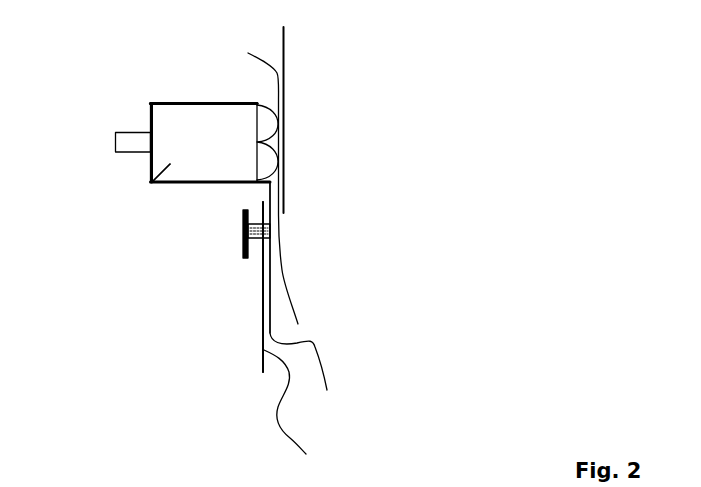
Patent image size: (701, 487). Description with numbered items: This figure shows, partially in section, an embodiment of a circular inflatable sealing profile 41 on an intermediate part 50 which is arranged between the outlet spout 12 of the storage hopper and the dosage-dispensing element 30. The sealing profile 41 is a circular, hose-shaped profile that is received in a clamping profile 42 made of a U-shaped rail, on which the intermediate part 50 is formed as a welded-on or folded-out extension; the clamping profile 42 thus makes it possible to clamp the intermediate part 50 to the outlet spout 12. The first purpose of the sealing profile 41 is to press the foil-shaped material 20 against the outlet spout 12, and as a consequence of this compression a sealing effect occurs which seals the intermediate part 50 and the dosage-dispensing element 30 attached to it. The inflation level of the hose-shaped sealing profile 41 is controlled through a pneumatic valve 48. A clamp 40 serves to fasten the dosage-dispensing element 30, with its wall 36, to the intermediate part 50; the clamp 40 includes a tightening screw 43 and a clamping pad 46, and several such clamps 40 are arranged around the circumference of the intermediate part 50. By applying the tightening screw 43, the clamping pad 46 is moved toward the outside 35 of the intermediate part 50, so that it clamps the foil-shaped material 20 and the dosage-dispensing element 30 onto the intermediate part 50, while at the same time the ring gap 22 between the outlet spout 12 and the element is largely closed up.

The outlet spout 12 is at (307, 117).
The foil-shaped material 20 is at (281, 247).
The ring gap 22 is at (283, 213).
The dosage-dispensing element 30 is at (252, 363).
The outside of the intermediate part 35 is at (270, 192).
The wall 36 is at (299, 408).
The clamp 40 is at (253, 258).
The sealing profile 41 is at (153, 183).
The clamping profile 42 is at (169, 102).
The tightening screw 43 is at (243, 250).
The clamping pad 46 is at (268, 103).
The pneumatic valve 48 is at (115, 153).
The intermediate part 50 is at (202, 193).